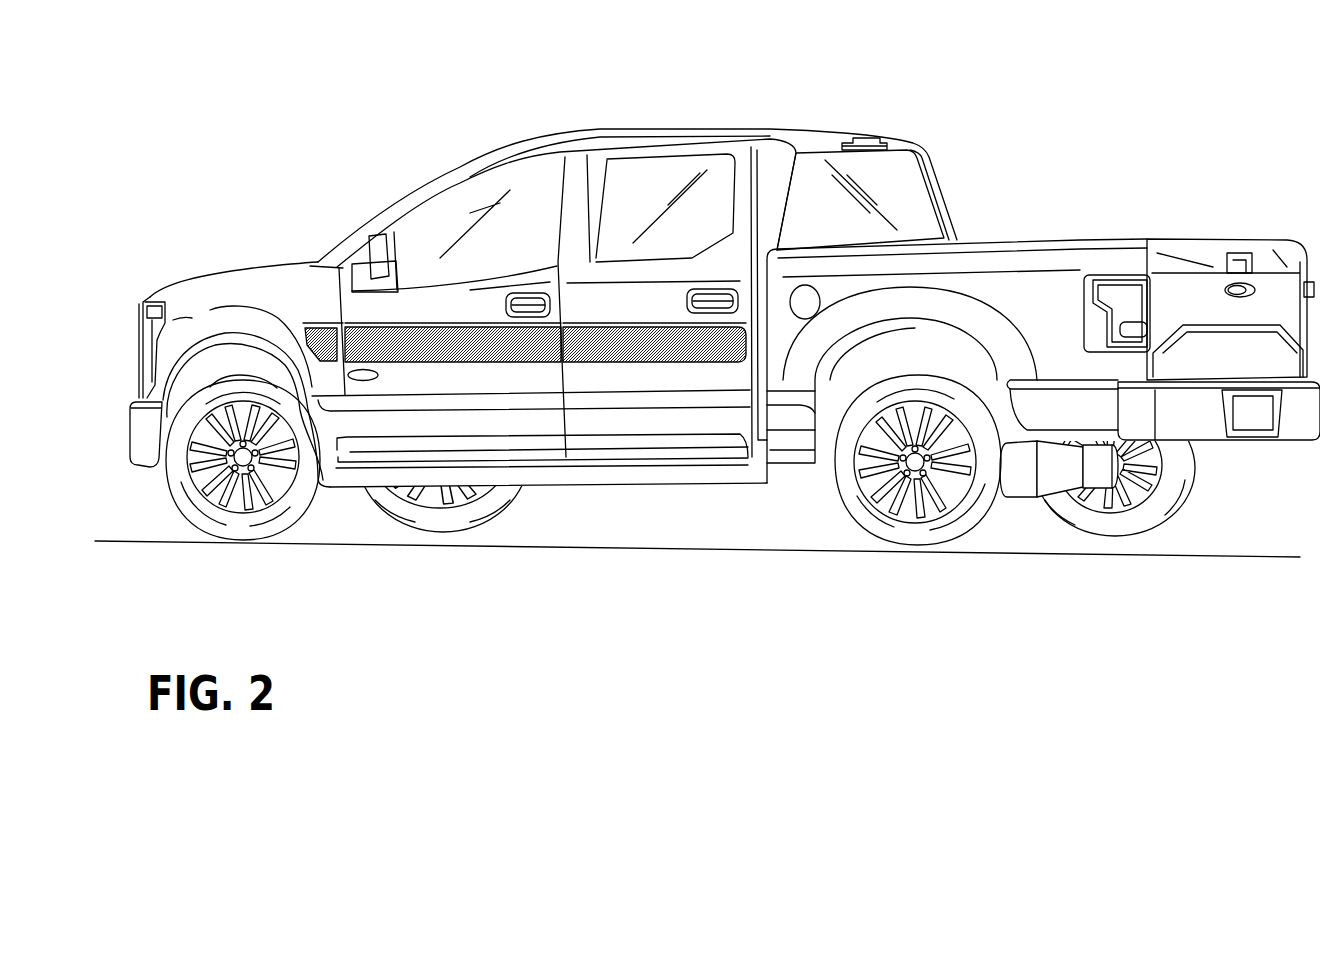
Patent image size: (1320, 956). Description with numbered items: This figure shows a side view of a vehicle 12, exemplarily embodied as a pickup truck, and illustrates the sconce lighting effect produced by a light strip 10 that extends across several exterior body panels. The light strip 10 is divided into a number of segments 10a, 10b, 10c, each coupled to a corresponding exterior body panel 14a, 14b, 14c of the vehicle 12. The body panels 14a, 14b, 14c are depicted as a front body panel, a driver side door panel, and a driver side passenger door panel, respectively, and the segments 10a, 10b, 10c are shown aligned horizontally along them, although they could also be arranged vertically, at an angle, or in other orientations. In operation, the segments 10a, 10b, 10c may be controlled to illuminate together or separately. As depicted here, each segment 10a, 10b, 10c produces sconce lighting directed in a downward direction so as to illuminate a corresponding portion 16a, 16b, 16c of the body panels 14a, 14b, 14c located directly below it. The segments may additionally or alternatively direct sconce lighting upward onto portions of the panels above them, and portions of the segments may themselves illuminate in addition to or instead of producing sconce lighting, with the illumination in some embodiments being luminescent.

The light strip 10 is at (548, 277).
The segment of the light strip 10a is at (323, 323).
The segment of the light strip 10b is at (487, 305).
The segment of the light strip 10c is at (624, 330).
The vehicle 12 is at (866, 132).
The exterior body panel 14a is at (303, 297).
The exterior body panel 14b is at (468, 317).
The exterior body panel 14c is at (679, 293).
The portion of the body panel 16a is at (331, 337).
The portion of the body panel 16b is at (463, 353).
The portion of the body panel 16c is at (653, 352).